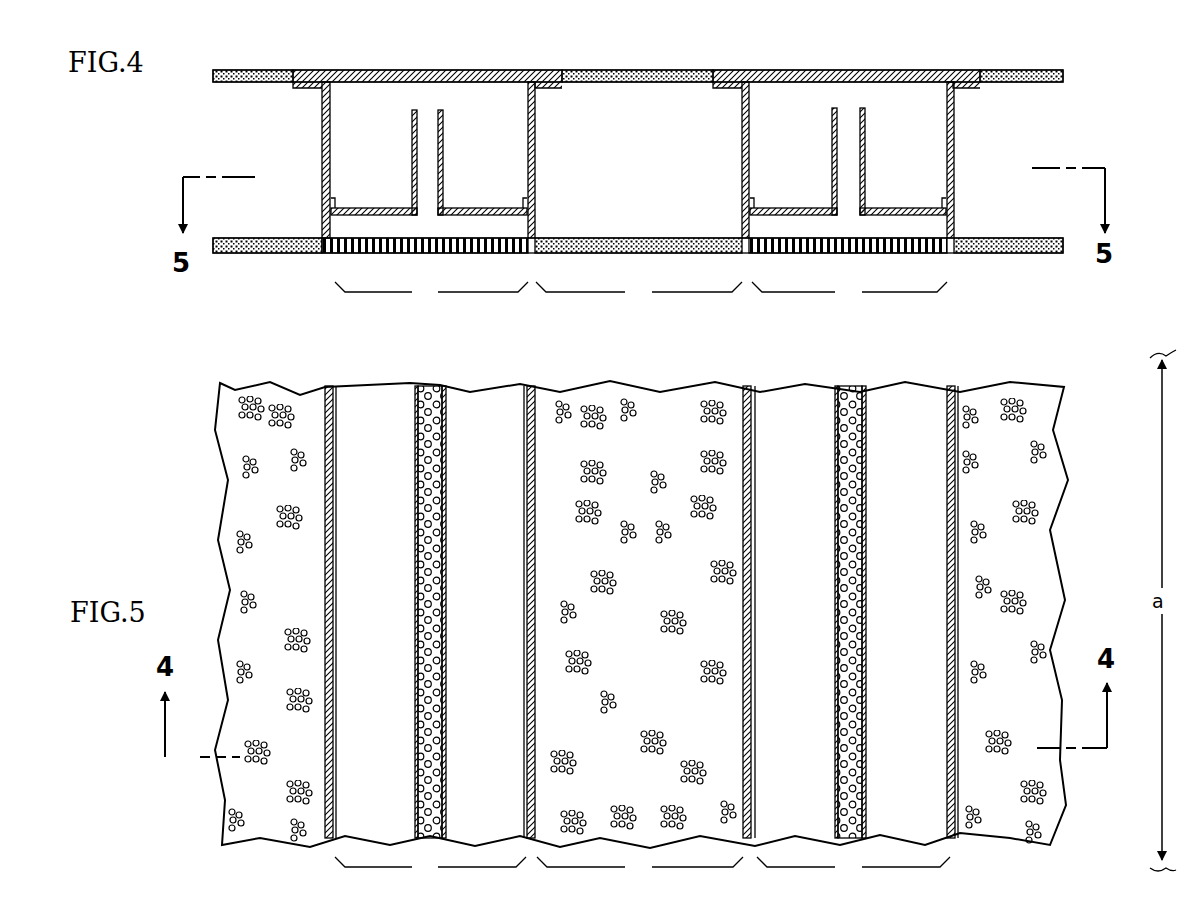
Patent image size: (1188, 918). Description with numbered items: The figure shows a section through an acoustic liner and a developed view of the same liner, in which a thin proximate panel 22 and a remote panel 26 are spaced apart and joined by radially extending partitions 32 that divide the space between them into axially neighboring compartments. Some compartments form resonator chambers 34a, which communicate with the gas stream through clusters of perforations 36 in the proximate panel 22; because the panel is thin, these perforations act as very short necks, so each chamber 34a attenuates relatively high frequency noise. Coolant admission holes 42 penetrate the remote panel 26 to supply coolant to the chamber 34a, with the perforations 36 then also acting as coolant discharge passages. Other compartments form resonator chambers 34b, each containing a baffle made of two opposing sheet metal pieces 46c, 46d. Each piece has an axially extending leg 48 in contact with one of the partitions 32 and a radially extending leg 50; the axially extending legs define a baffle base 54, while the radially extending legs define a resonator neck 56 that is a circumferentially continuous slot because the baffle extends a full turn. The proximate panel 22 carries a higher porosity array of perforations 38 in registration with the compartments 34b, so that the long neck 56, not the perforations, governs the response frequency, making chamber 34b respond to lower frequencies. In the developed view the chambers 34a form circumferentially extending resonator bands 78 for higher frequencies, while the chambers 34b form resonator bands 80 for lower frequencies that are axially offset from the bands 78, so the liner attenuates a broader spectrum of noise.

In FIG. 4, the proximate panel 22 is at (638, 271).
In FIG. 5, the proximate panel 22 is at (1006, 380).
In FIG. 4, the outer skin / face sheet 26 is at (1027, 62).
In FIG. 4, the partitions 32 is at (332, 158).
In FIG. 5, the partitions 32 is at (336, 716).
In FIG. 4, the resonator chamber 34a is at (633, 148).
In FIG. 5, the resonator chamber 34a is at (640, 599).
In FIG. 4, the resonator chamber 34b is at (634, 111).
In FIG. 5, the resonator chamber 34b is at (637, 601).
In FIG. 4, the perforations 36 is at (268, 254).
In FIG. 5, the perforations 36 is at (300, 638).
In FIG. 4, the perforations 38 is at (420, 254).
In FIG. 5, the perforations 38 is at (640, 589).
In FIG. 4, the coolant admission holes 42 is at (244, 72).
In FIG. 5, the sheet metal piece 46c is at (585, 788).
In FIG. 5, the sheet metal piece 46d is at (689, 788).
In FIG. 4, the axially extending leg 48 is at (638, 162).
In FIG. 5, the axially extending leg 48 is at (392, 396).
In FIG. 4, the radially extending leg 50 is at (412, 190).
In FIG. 5, the radially extending leg 50 is at (415, 504).
In FIG. 4, the baffle base 54 is at (470, 214).
In FIG. 4, the resonator neck 56 is at (412, 136).
In FIG. 5, the resonator neck 56 is at (420, 576).
In FIG. 4, the resonator bands 78 is at (639, 293).
In FIG. 5, the resonator bands 78 is at (640, 868).
In FIG. 4, the resonator bands 80 is at (641, 293).
In FIG. 5, the resonator bands 80 is at (642, 868).